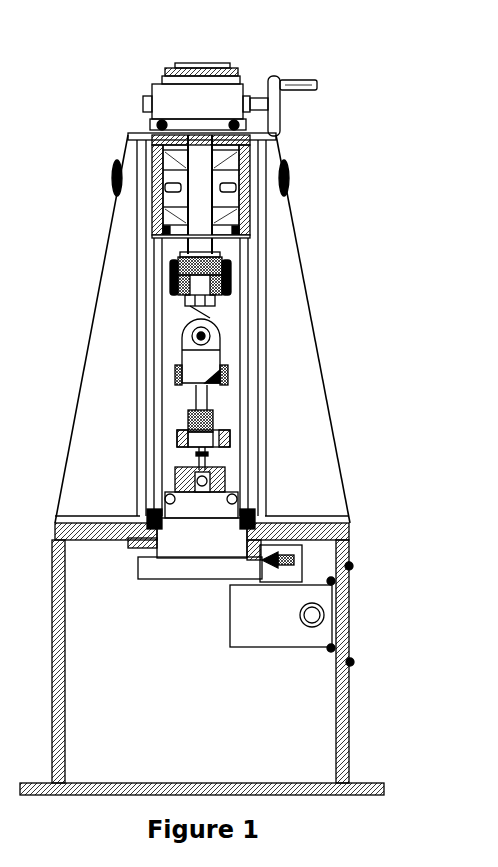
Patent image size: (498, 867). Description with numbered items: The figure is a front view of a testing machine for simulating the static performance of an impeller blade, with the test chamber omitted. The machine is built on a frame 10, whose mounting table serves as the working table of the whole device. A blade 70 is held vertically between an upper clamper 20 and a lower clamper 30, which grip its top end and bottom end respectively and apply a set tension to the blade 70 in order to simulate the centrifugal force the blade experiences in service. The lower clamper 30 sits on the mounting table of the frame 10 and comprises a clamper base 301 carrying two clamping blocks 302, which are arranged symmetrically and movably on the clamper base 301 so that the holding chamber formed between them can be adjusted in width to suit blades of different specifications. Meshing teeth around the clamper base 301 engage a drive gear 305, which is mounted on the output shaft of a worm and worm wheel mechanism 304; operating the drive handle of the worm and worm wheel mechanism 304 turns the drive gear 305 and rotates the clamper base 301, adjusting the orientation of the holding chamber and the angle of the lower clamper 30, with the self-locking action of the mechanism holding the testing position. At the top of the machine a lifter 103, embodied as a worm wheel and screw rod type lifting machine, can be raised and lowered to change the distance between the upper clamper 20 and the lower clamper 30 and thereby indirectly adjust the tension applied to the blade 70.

The lifter 103 is at (218, 92).
The frame 10 is at (307, 387).
The upper clamper 20 is at (208, 358).
The clamping block 302 is at (227, 470).
The blade 70 is at (193, 462).
The lower clamper 30 is at (218, 505).
The clamper base 301 is at (182, 533).
The drive gear 305 is at (290, 570).
The worm and worm wheel mechanism 304 is at (295, 636).